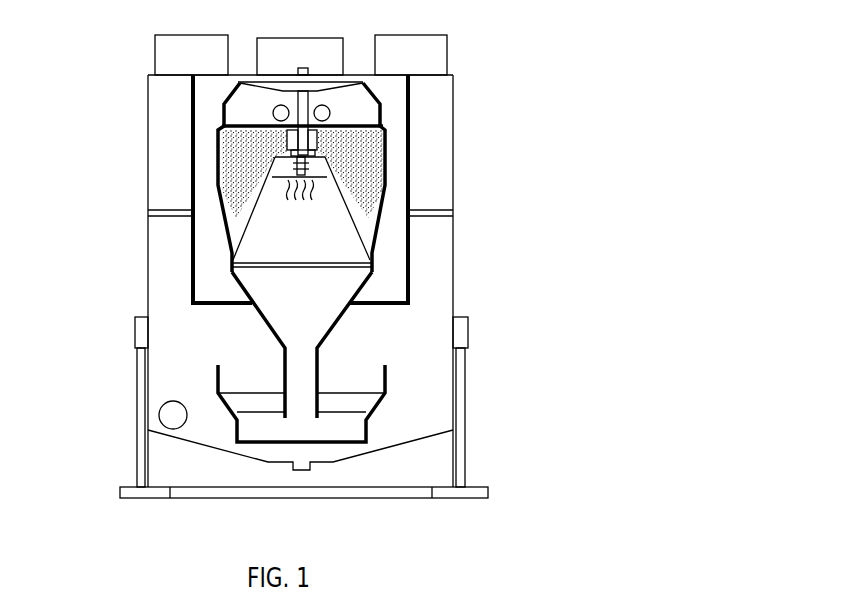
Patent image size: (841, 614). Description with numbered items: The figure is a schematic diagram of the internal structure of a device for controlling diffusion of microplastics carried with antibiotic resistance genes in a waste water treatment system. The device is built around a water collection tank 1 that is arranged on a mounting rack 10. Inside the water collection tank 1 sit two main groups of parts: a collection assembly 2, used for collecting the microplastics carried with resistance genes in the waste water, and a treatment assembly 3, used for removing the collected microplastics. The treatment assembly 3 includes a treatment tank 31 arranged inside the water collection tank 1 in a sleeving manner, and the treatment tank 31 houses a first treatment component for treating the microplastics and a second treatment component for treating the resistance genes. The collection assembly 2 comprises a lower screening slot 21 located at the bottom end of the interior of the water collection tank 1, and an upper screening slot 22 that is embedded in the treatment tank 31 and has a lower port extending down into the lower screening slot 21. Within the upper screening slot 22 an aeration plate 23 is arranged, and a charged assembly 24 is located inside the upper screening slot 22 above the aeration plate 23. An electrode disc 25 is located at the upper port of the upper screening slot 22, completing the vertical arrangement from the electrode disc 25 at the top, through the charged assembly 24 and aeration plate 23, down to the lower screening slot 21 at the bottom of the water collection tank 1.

The water collection tank 1 is at (344, 281).
The collection assembly 2 is at (225, 177).
The treatment assembly 3 is at (241, 40).
The mounting rack 10 is at (257, 407).
The lower screening slot 21 is at (205, 366).
The upper screening slot 22 is at (211, 320).
The aeration plate 23 is at (372, 211).
The charged assembly 24 is at (367, 154).
The electrode disc 25 is at (376, 81).
The treatment tank 31 is at (230, 189).